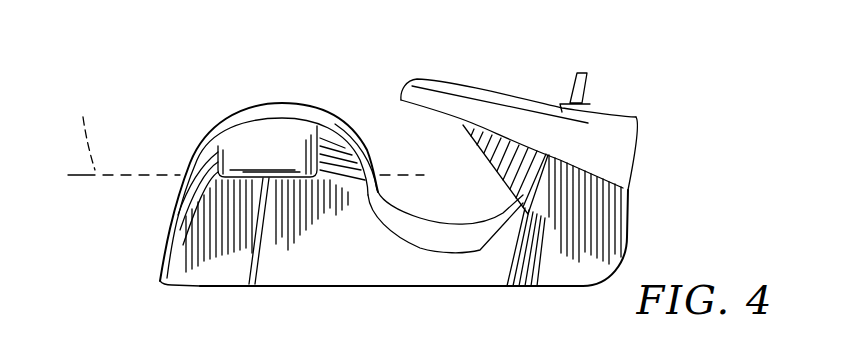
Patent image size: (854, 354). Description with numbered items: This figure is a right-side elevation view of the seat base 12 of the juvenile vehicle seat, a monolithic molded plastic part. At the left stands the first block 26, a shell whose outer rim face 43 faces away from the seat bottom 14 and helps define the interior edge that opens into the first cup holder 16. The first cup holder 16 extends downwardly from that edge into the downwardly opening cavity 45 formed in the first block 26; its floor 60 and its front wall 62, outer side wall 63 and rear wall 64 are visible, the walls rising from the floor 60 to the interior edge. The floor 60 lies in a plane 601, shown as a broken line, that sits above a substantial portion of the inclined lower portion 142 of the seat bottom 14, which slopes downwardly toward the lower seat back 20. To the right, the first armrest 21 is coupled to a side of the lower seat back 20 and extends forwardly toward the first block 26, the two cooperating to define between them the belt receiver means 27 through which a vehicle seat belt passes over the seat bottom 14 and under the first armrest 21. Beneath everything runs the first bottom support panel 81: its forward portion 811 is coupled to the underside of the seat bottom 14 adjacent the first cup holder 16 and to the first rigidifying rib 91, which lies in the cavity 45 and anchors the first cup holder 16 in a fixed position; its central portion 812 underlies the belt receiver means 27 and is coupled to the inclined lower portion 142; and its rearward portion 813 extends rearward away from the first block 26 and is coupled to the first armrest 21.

The seat base 12 is at (177, 134).
The seat bottom 14 is at (405, 193).
The first cup holder 16 is at (245, 155).
The lower seat back 20 is at (520, 207).
The first armrest 21 is at (514, 85).
The first block 26 is at (220, 125).
The belt receiver means 27 is at (445, 128).
The outer rim face 43 is at (287, 118).
The downwardly opening cavity 45 is at (340, 180).
The floor 60 is at (237, 182).
The front wall 62 is at (197, 160).
The outer side wall 63 is at (287, 148).
The rear wall 64 is at (338, 155).
The first bottom support panel 81 is at (360, 258).
The first rigidifying rib 91 is at (245, 224).
The inclined lower portion 142 is at (421, 212).
The plane 601 is at (116, 131).
The forward portion 811 is at (190, 243).
The central portion 812 is at (423, 265).
The rearward portion 813 is at (593, 232).